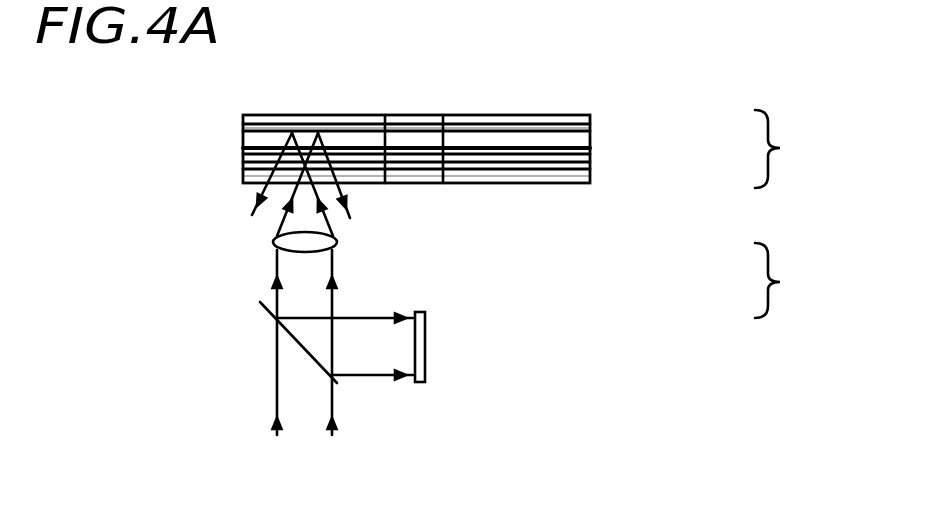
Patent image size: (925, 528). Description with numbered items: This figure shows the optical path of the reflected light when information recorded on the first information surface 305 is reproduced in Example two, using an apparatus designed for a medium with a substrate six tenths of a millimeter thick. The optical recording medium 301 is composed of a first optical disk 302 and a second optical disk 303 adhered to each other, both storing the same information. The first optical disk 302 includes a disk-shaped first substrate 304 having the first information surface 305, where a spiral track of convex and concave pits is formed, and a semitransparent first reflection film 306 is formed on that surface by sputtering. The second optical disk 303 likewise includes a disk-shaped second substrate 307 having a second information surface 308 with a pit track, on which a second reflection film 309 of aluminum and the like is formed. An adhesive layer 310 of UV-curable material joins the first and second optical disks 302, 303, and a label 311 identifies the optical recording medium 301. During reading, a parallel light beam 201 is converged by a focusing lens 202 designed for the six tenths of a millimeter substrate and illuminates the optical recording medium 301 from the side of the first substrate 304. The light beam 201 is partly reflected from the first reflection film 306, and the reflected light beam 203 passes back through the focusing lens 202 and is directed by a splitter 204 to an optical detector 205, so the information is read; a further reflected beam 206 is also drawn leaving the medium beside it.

The parallel light beam 201 is at (300, 422).
The focusing lens 202 is at (337, 245).
The reflected light beam 203 is at (290, 219).
The splitter 204 is at (337, 383).
The optical detector 205 is at (428, 347).
The reflected light beam 206 is at (350, 218).
The optical recording medium 301 is at (600, 69).
The first optical disk 302 is at (806, 280).
The second optical disk 303 is at (806, 149).
The first substrate 304 is at (585, 178).
The first information surface 305 is at (522, 166).
The first reflection film 306 is at (588, 175).
The second substrate 307 is at (590, 142).
The second information surface 308 is at (362, 128).
The second reflection film 309 is at (590, 130).
The adhesive layer 310 is at (590, 150).
The label 311 is at (590, 118).